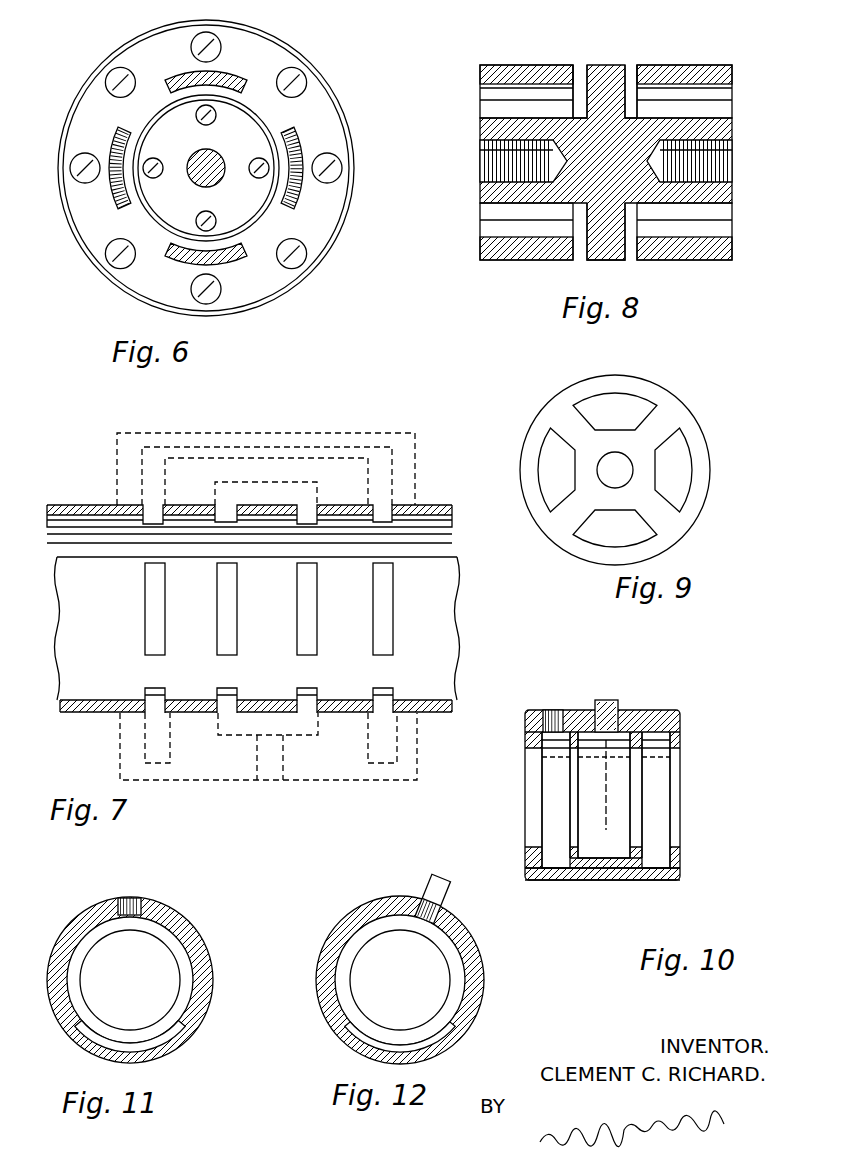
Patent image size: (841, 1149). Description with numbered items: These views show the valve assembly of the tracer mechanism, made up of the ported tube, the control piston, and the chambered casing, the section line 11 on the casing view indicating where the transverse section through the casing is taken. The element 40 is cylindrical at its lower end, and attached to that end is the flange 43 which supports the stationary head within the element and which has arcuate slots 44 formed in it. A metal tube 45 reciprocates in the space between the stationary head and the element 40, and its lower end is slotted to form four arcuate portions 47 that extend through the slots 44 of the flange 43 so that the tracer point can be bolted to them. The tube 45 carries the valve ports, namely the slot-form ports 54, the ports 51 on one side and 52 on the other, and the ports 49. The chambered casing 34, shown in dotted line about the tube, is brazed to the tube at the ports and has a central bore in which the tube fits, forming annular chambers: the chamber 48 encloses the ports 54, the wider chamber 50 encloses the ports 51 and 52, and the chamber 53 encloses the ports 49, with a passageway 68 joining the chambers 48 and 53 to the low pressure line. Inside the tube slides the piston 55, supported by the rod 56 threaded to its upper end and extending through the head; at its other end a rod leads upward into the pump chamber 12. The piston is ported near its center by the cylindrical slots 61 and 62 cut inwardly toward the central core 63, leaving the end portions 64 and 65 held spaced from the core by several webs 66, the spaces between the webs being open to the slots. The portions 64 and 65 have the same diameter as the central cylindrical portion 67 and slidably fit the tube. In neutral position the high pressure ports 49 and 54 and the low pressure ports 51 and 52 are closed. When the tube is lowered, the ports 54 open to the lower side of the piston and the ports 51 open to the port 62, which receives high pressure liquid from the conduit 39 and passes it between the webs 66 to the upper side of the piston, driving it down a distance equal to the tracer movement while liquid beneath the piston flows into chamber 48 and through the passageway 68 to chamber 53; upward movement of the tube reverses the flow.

In FIG. 10, the section line 11— 11 is at (552, 708).
In FIG. 10, the pump chamber 12 is at (606, 740).
In FIG. 10, the chambered casing 34 is at (675, 722).
In FIG. 11, the chambered casing 34 is at (147, 907).
In FIG. 12, the chambered casing 34 is at (447, 918).
In FIG. 10, the conduit 39 is at (613, 715).
In FIG. 12, the conduit 39 is at (440, 883).
In FIG. 6, the element 40 is at (317, 263).
In FIG. 6, the flange 43 is at (322, 107).
In FIG. 6, the arcuate slots 44 is at (303, 147).
In FIG. 7, the tube 45 is at (440, 505).
In FIG. 6, the arcuate portions 47 is at (232, 72).
In FIG. 10, the chamber 48 is at (660, 733).
In FIG. 7, the ports 49 is at (378, 503).
In FIG. 10, the chamber 50 is at (593, 740).
In FIG. 12, the chamber 50 is at (455, 980).
In FIG. 6, the ports 51 is at (153, 202).
In FIG. 7, the ports 51 is at (303, 503).
In FIG. 7, the ports 52 is at (222, 503).
In FIG. 10, the chamber 53 is at (545, 747).
In FIG. 11, the chamber 53 is at (182, 958).
In FIG. 7, the ports 54 is at (153, 503).
In FIG. 8, the piston 55 is at (605, 75).
In FIG. 6, the rod 56 is at (220, 180).
In FIG. 8, the ports or slots 61 is at (578, 73).
In FIG. 8, the ports or slots 62 is at (628, 73).
In FIG. 8, the central core 63 is at (670, 127).
In FIG. 8, the end portion 64 is at (713, 73).
In FIG. 8, the end portion 65 is at (498, 73).
In FIG. 9, the end portion 65 is at (665, 398).
In FIG. 8, the webs 66 is at (490, 108).
In FIG. 9, the webs 66 is at (653, 430).
In FIG. 8, the central cylindrical portion 67 is at (610, 253).
In FIG. 10, the passageway 68 is at (630, 872).
In FIG. 11, the passageway 68 is at (172, 1043).
In FIG. 12, the passageway 68 is at (443, 1040).